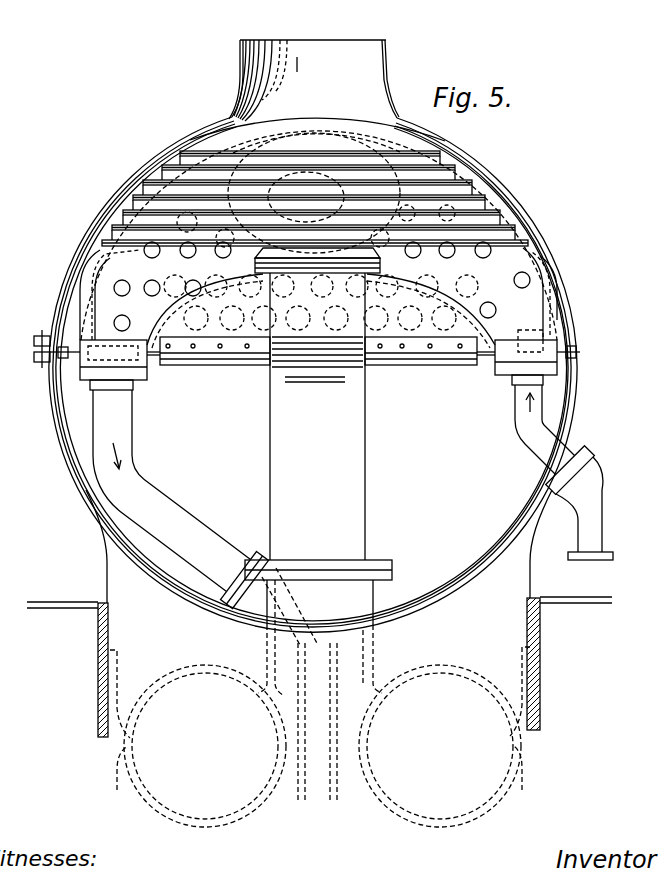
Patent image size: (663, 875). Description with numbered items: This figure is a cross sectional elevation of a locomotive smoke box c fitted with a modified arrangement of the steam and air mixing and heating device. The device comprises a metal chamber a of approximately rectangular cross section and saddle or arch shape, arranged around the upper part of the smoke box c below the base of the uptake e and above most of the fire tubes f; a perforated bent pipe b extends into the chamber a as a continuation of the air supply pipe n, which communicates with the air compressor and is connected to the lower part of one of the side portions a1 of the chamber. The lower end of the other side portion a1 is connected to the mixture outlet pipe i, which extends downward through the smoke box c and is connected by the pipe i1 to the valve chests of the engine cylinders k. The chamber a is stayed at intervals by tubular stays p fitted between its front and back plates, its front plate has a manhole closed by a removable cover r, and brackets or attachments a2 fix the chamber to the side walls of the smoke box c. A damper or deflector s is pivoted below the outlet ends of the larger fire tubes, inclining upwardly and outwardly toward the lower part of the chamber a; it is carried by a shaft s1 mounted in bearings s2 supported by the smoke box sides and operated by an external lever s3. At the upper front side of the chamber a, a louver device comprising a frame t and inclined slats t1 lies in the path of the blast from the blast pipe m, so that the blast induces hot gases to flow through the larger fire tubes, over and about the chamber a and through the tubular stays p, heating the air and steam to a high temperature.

The uptake e is at (314, 80).
The removable cover r is at (302, 150).
The smoke box c is at (196, 150).
The frame t is at (145, 185).
The inclined slats t1 is at (344, 206).
The stays p is at (172, 286).
The chamber a is at (321, 300).
The perforated bent pipe b is at (450, 283).
The side portions a1 is at (587, 268).
The brackets or attachments a2 is at (560, 320).
The bearings s2 is at (60, 362).
The external lever s3 is at (34, 349).
The fire tubes f is at (321, 302).
The damper or deflector s is at (215, 345).
The shaft s1 is at (152, 360).
The mixture outlet pipe i is at (181, 499).
The blast pipe m is at (318, 436).
The air supply pipe n is at (564, 472).
The pipe i1 is at (320, 684).
The engine cylinders k is at (320, 737).